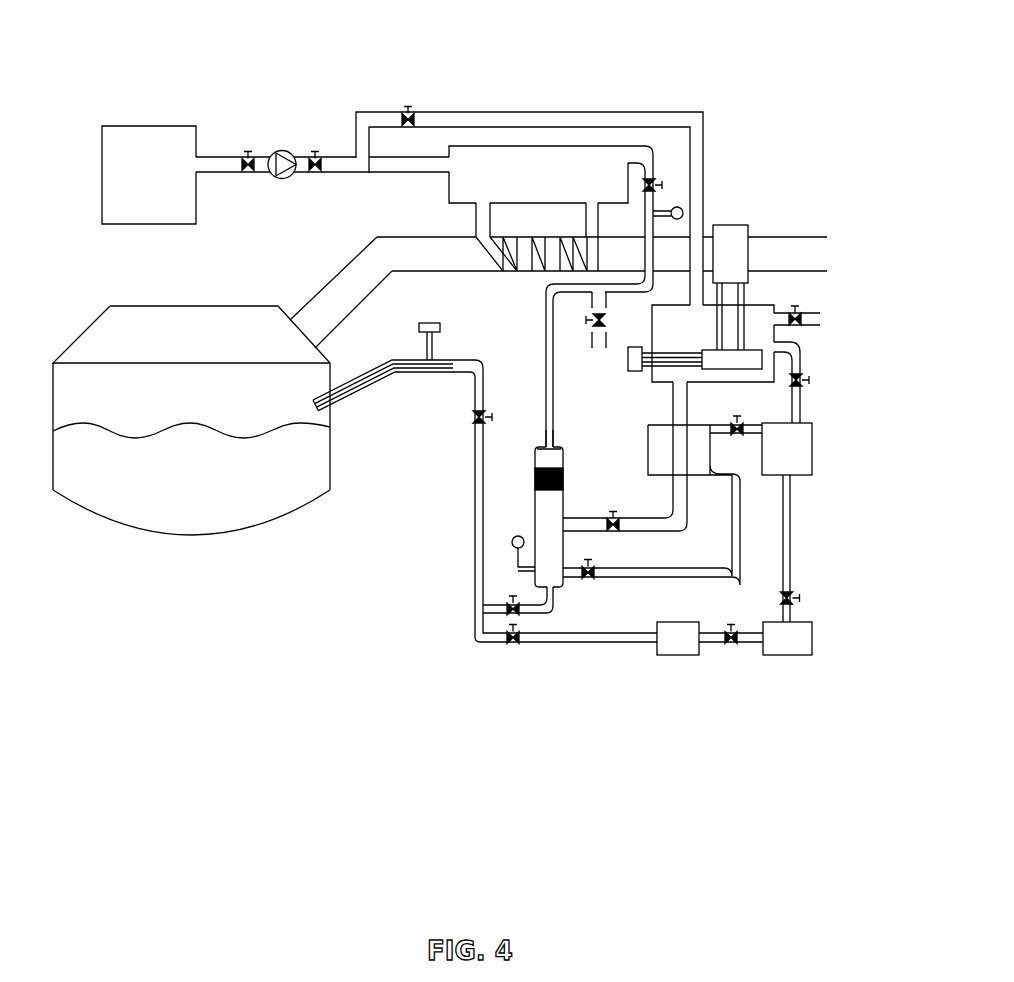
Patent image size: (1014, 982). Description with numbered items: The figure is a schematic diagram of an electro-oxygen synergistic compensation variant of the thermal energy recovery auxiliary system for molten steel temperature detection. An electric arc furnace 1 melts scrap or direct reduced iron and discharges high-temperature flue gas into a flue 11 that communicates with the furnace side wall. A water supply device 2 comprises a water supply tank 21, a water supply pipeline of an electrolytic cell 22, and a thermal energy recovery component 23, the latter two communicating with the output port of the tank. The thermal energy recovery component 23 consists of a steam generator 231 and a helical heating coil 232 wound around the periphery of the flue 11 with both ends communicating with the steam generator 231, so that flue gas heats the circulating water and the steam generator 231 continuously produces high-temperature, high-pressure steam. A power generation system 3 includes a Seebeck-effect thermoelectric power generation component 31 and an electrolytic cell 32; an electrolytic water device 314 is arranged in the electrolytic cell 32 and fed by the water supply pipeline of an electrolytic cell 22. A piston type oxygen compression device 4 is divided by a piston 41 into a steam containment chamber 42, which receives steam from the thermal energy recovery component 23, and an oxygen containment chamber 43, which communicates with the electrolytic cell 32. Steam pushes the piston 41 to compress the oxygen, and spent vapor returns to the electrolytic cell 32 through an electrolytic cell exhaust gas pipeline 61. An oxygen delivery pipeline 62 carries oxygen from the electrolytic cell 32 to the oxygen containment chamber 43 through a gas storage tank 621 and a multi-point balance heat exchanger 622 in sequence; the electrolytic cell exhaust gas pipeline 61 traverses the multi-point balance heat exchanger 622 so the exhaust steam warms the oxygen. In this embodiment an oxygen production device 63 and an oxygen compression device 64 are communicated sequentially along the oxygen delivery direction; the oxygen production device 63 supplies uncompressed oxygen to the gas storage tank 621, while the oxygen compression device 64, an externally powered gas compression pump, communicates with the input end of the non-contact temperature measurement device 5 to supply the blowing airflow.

The electric arc furnace 1 is at (190, 517).
The water supply device 2 is at (238, 130).
The water supply tank 21 is at (127, 172).
The flue 11 is at (415, 250).
The water supply pipeline of an electrolytic cell 22 is at (500, 120).
The thermal energy recovery component 23 is at (594, 236).
The steam generator 231 is at (478, 158).
The helical heating coil 232 is at (583, 250).
The Seebeck-effect thermoelectric power generation component 31 is at (732, 247).
The power generation system 3 is at (769, 339).
The electrolytic cell 32 is at (730, 375).
The electrolytic water device 314 is at (767, 345).
The gas storage tank 621 is at (797, 437).
The multi-point balance heat exchanger 622 is at (700, 457).
The piston 41 is at (563, 483).
The steam containment chamber 42 is at (547, 458).
The oxygen containment chamber 43 is at (542, 572).
The piston type oxygen compression device 4 is at (602, 564).
The non-contact temperature measurement device 5 is at (355, 397).
The electrolytic cell exhaust gas pipeline 61 is at (657, 525).
The oxygen delivery pipeline 62 is at (733, 573).
The oxygen production device 63 is at (791, 640).
The oxygen compression device 64 is at (677, 638).